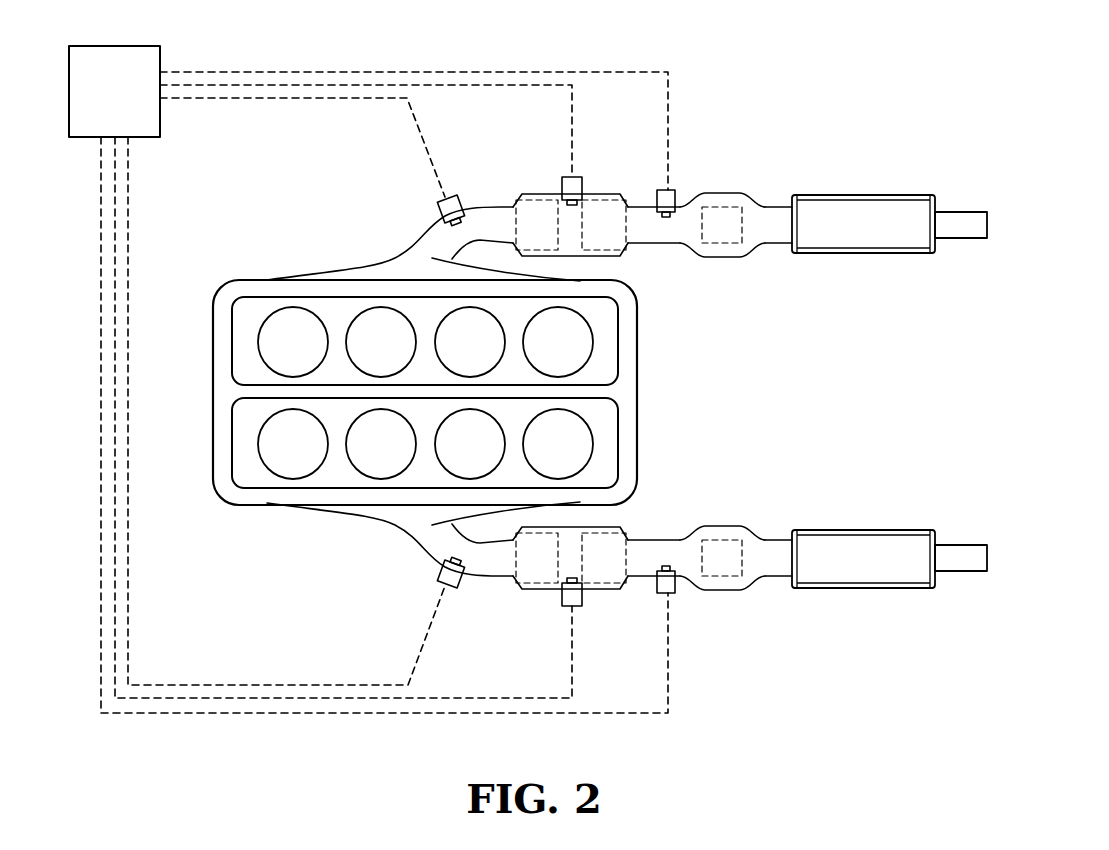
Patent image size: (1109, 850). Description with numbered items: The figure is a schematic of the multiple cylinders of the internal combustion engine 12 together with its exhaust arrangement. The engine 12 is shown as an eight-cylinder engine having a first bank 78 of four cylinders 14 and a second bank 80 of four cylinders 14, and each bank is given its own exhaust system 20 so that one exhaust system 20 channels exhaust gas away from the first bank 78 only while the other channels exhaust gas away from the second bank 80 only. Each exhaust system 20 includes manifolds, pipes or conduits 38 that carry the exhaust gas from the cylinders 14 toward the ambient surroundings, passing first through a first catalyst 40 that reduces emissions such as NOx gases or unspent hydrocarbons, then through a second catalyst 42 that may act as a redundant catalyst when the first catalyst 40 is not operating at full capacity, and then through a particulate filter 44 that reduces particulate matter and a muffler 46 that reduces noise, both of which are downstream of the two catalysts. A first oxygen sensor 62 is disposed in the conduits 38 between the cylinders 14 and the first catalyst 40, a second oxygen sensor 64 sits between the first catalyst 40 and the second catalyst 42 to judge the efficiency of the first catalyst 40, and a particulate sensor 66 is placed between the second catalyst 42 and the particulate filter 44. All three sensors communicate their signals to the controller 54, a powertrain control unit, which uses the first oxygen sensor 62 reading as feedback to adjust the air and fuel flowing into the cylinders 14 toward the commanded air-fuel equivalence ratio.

The internal combustion engine 12 is at (438, 389).
The cylinder 14 is at (380, 340).
The exhaust system 20 is at (627, 396).
The conduits 38 is at (686, 254).
The first catalyst 40 is at (513, 227).
The second catalyst 42 is at (633, 226).
The particulate filter 44 is at (747, 223).
The muffler 46 is at (858, 195).
The controller 54 is at (142, 46).
The first oxygen sensor 62 is at (437, 207).
The second oxygen sensor 64 is at (562, 192).
The particulate sensor 66 is at (656, 204).
The first bank 78 is at (681, 300).
The second bank 80 is at (681, 398).